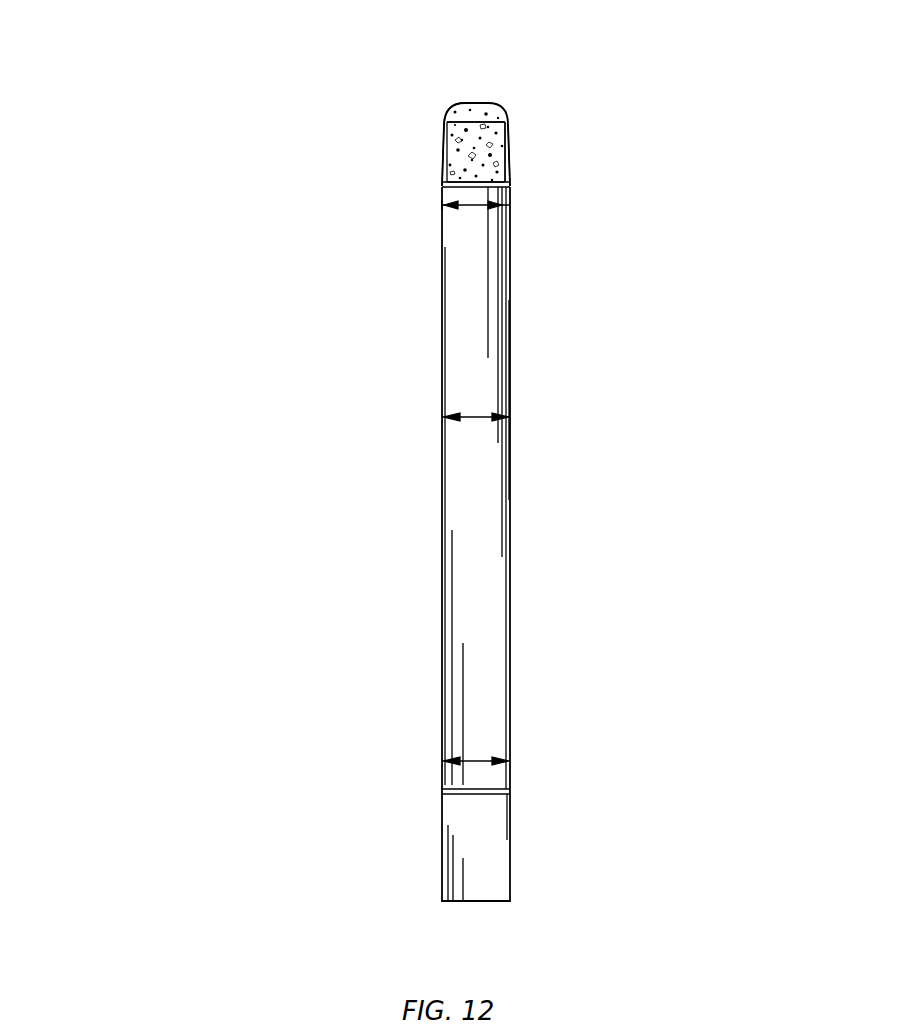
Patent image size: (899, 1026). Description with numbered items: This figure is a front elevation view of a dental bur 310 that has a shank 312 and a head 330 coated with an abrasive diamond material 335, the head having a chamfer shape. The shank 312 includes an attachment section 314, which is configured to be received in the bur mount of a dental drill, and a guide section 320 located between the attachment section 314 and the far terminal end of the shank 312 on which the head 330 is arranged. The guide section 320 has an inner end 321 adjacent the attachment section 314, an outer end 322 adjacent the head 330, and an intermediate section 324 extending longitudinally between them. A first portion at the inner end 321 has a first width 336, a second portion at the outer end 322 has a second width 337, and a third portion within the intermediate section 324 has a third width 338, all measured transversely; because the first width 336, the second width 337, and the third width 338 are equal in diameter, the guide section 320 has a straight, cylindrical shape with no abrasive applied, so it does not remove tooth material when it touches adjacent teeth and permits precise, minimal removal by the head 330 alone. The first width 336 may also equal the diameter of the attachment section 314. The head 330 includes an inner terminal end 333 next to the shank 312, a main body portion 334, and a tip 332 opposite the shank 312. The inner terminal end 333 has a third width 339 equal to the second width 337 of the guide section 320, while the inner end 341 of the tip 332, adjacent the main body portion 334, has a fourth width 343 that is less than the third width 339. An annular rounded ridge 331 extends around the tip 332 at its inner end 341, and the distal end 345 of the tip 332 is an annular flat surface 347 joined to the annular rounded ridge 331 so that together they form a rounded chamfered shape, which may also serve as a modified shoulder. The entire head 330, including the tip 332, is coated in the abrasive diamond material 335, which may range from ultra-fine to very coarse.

The dental bur 310 is at (142, 150).
The shank 312 is at (603, 360).
The attachment section 314 is at (540, 850).
The guide section 320 is at (517, 538).
The inner end 321 is at (415, 783).
The outer end 322 is at (436, 205).
The intermediate section 324 is at (517, 395).
The head 330 is at (720, 148).
The annular rounded ridge 331 is at (512, 99).
The tip 332 is at (509, 68).
The inner terminal end 333 is at (436, 181).
The main body portion 334 is at (517, 153).
The abrasive diamond material 335 is at (443, 148).
The first width 336 is at (478, 758).
The second width 337 is at (478, 210).
The third width 338 is at (477, 414).
The third width 339 is at (495, 180).
The inner end 341 is at (517, 123).
The fourth width 343 is at (478, 112).
The distal end 345 is at (450, 100).
The annular flat surface 347 is at (476, 98).